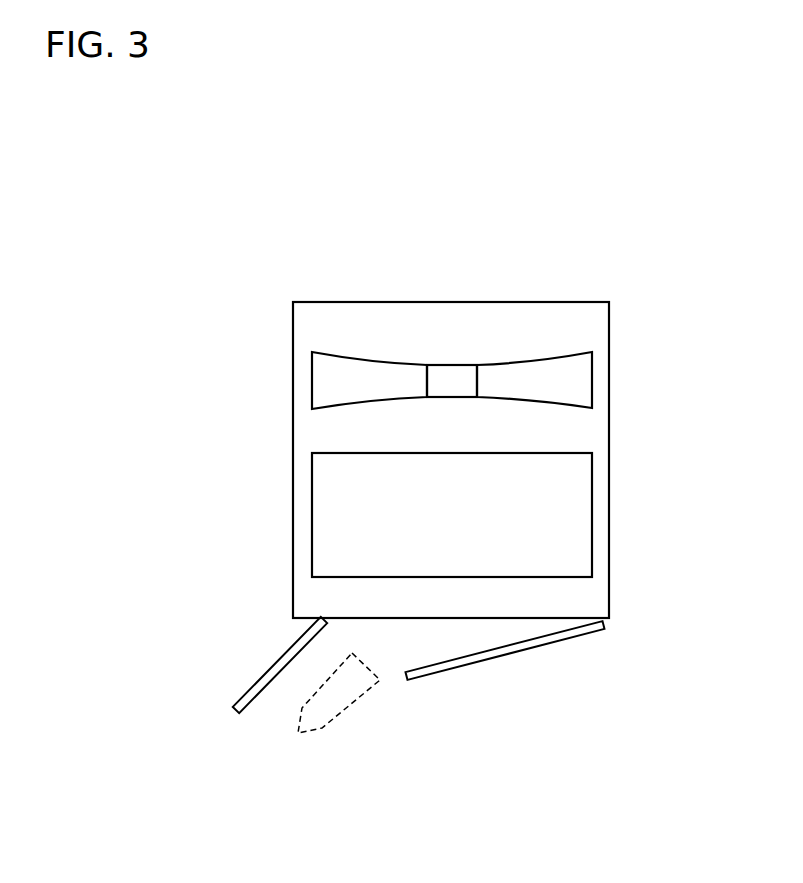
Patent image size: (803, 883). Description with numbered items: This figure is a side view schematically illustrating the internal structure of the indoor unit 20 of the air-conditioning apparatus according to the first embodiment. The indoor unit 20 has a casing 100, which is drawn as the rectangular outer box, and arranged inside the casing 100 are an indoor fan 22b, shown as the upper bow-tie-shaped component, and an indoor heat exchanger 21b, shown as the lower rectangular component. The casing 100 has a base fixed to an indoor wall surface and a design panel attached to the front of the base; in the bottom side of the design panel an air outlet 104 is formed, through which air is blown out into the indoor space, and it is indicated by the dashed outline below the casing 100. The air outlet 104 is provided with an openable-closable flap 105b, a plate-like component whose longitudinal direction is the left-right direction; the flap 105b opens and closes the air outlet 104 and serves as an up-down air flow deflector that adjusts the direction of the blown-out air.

The indoor unit 20 is at (564, 233).
The casing 100 is at (609, 328).
The indoor fan 22b is at (592, 372).
The indoor heat exchanger 21b is at (592, 478).
The flap 105b is at (263, 680).
The air outlet 104 is at (389, 686).